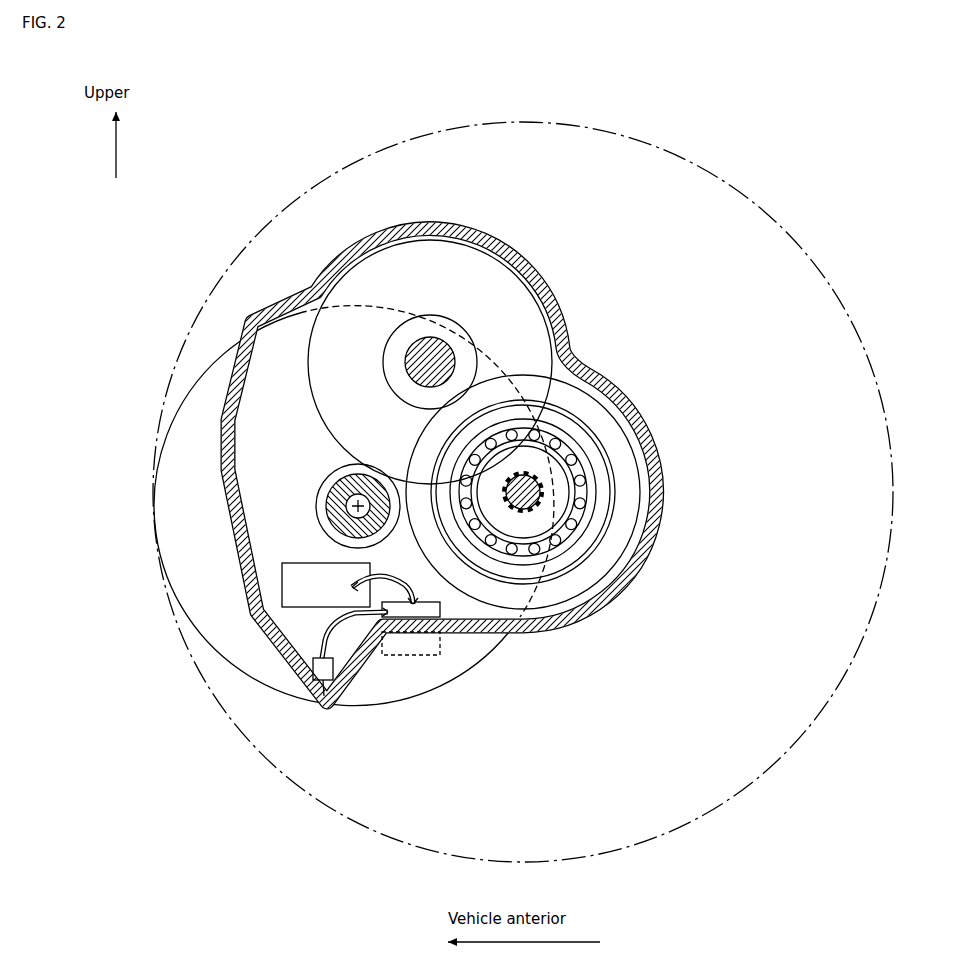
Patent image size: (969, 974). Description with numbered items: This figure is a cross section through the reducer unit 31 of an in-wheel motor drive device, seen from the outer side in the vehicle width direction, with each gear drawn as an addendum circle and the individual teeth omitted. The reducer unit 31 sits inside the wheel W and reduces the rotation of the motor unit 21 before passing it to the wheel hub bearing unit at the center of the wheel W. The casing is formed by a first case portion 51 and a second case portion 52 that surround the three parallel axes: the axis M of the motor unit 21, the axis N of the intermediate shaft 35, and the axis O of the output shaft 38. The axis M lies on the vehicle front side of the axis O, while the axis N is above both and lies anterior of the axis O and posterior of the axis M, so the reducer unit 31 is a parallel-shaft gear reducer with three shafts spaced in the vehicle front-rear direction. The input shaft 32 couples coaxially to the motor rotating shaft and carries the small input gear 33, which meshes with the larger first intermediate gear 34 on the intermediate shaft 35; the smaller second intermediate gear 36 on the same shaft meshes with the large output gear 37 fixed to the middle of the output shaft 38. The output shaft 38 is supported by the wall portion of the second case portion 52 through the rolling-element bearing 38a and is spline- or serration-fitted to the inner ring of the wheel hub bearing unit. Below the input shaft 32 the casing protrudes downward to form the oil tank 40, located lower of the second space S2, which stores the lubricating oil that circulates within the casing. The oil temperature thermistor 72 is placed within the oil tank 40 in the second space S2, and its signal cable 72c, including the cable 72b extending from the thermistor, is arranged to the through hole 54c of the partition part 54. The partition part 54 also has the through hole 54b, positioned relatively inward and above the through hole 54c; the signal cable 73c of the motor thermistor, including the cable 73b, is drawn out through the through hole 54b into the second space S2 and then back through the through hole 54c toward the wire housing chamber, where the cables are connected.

The wheel W is at (748, 183).
The motor unit 21 is at (176, 410).
The first case portion 51 is at (166, 438).
The reducer unit 31 is at (546, 268).
The second case portion 52 is at (506, 248).
The output gear 37 is at (611, 403).
The oil tank 40 is at (303, 652).
The second space S2 is at (282, 362).
The intermediate shaft 35 is at (483, 318).
The first intermediate gear 34 is at (451, 237).
The axis N is at (432, 358).
The second intermediate gear 36 is at (478, 335).
The rolling-element bearing 38a is at (580, 461).
The output shaft 38 is at (538, 499).
The axis O is at (526, 491).
The input shaft 32 is at (277, 547).
The input gear 33 is at (325, 488).
The axis M is at (344, 500).
The partition part 54 is at (262, 574).
The through hole 54b is at (282, 585).
The through hole 54c is at (453, 613).
The signal cable 73c is at (374, 615).
The cable 73b is at (385, 590).
The signal cable 72c is at (340, 640).
The cable 72b is at (355, 633).
The oil temperature thermistor 72 is at (325, 709).